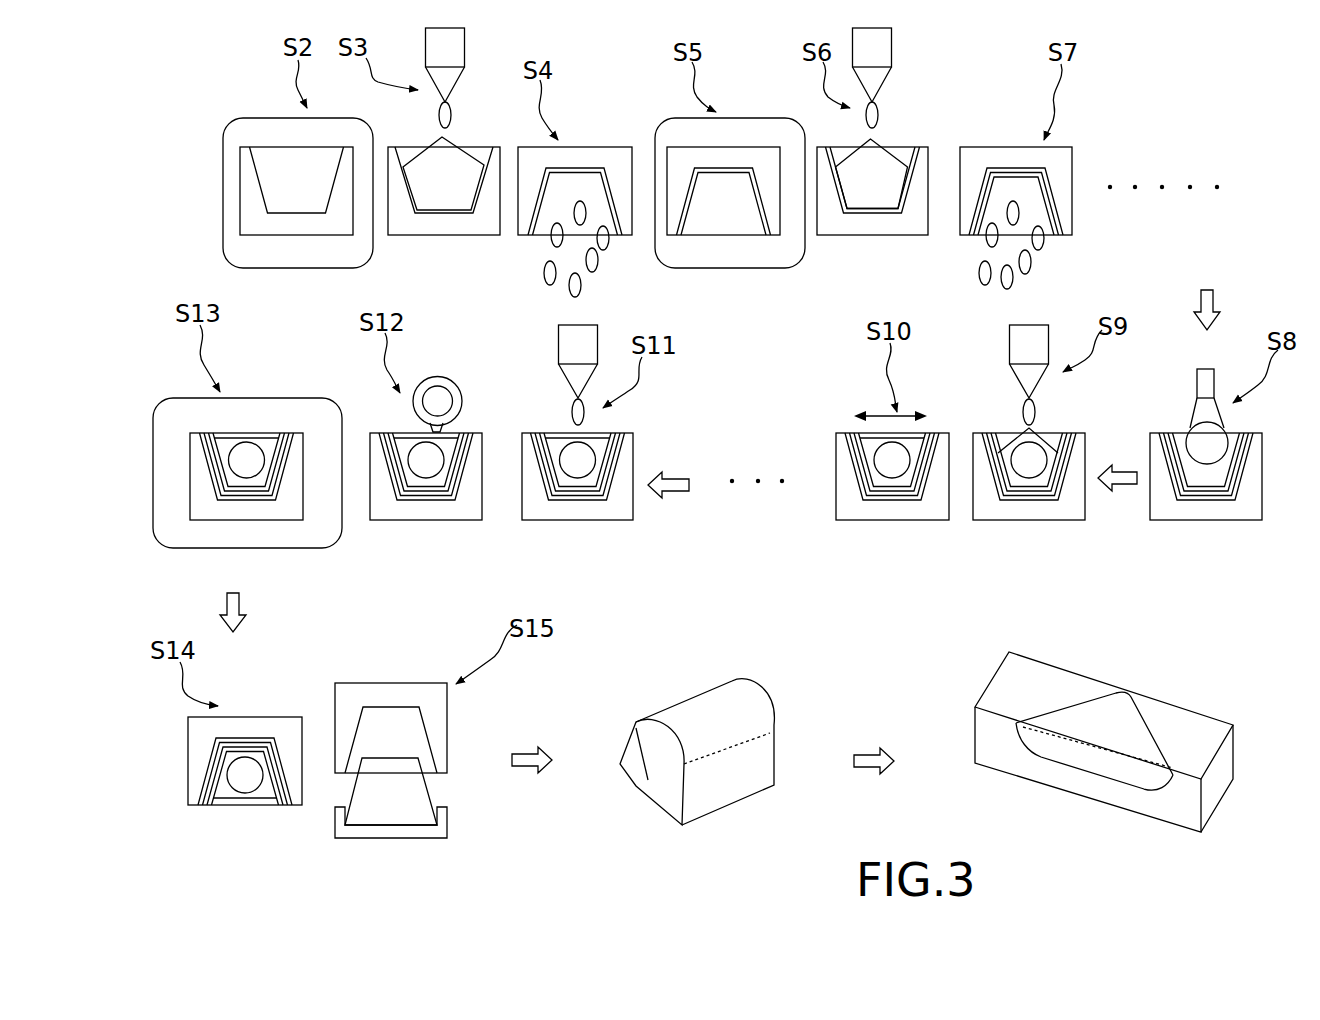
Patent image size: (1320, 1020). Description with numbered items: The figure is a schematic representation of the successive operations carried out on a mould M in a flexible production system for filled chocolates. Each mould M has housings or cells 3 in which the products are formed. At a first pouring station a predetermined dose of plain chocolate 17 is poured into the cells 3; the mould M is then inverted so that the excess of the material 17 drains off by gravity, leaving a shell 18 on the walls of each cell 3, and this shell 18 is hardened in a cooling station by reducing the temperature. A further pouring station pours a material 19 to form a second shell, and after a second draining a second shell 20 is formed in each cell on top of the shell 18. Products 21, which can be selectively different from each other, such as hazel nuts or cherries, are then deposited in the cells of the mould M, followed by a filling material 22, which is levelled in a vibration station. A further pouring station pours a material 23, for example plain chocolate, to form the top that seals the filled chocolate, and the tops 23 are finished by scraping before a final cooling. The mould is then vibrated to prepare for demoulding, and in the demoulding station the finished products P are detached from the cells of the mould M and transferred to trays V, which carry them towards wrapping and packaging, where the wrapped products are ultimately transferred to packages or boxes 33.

The housing or cell 3 is at (584, 168).
The plain chocolate dose 17 is at (450, 168).
The shell 18 is at (810, 193).
The second shell material 19 is at (887, 163).
The second shell 20 is at (1050, 218).
The products 21 is at (1005, 423).
The filling material 22 is at (1034, 415).
The top material 23 is at (474, 389).
The packages or boxes 33 is at (1203, 704).
The mould M is at (725, 422).
The products P is at (559, 711).
The trays V is at (388, 832).